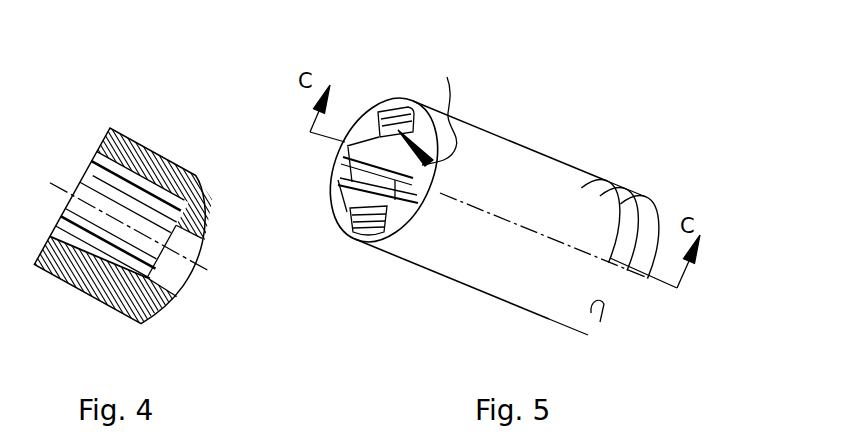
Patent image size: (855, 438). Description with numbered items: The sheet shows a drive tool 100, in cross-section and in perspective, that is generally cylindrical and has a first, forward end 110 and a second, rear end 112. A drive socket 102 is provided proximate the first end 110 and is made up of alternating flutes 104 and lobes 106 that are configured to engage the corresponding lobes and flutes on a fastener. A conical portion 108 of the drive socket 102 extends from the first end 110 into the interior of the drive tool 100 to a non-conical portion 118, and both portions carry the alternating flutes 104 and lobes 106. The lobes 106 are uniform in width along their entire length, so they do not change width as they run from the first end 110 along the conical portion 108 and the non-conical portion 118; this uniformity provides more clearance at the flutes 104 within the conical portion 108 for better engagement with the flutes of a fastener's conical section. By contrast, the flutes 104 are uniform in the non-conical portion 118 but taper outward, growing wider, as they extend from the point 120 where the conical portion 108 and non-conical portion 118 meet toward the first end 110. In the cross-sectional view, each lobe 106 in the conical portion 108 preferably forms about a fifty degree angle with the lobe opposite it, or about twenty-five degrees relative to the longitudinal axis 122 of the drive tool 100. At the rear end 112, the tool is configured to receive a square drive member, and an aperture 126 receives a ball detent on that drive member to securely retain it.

In FIG. 5, the drive tool 100 is at (520, 95).
In FIG. 5, the drive socket 102 is at (398, 76).
In FIG. 5, the flutes 104 is at (348, 193).
In FIG. 5, the lobes 106 is at (398, 117).
In FIG. 4, the conical portion 108 is at (128, 139).
In FIG. 4, the first end 110 is at (109, 136).
In FIG. 5, the first end 110 is at (343, 167).
In FIG. 5, the second end 112 is at (674, 311).
In FIG. 4, the non-conical portion 118 is at (188, 183).
In FIG. 4, the point 120 is at (138, 172).
In FIG. 5, the point 120 is at (395, 200).
In FIG. 4, the longitudinal axis 122 is at (180, 263).
In FIG. 5, the aperture 126 is at (594, 313).